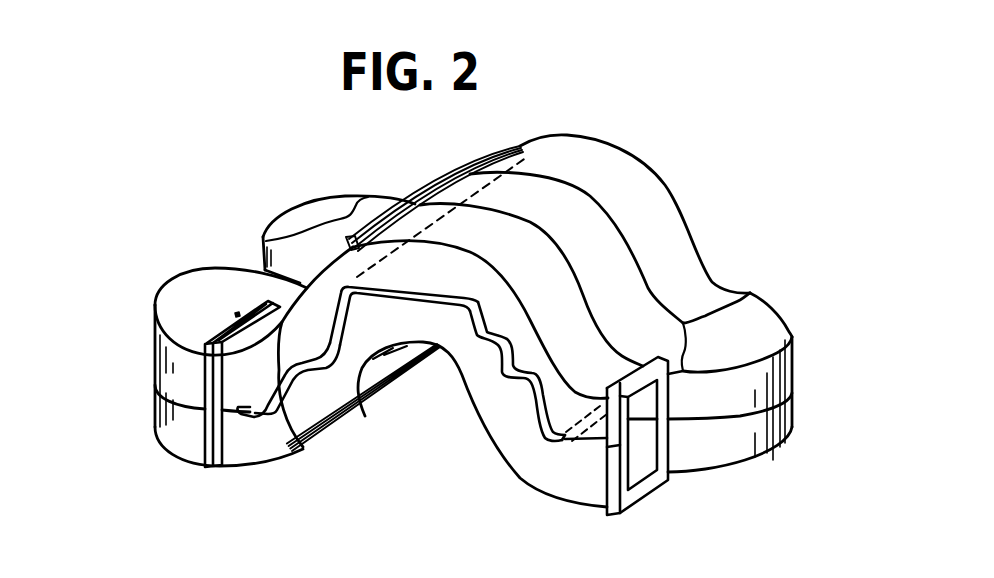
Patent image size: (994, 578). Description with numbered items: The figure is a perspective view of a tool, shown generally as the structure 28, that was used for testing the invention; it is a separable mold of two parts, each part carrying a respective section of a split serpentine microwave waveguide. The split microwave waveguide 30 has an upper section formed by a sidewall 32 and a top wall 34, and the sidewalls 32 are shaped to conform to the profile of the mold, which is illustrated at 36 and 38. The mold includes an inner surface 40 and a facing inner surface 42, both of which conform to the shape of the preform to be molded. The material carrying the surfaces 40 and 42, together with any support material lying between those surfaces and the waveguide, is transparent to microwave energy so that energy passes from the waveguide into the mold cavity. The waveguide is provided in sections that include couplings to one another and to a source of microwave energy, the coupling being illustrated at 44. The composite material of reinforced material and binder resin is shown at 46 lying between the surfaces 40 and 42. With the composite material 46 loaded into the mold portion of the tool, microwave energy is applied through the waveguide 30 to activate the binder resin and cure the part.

The structure 28 is at (690, 189).
The split microwave waveguide 30 is at (148, 299).
The sidewall 32 is at (226, 252).
The top wall 34 is at (311, 208).
The mold 36 is at (498, 323).
The mold 38 is at (503, 442).
The inner surface 40 is at (365, 414).
The inner surface 42 is at (300, 443).
The coupling 44 is at (633, 502).
The composite material 46 is at (467, 303).